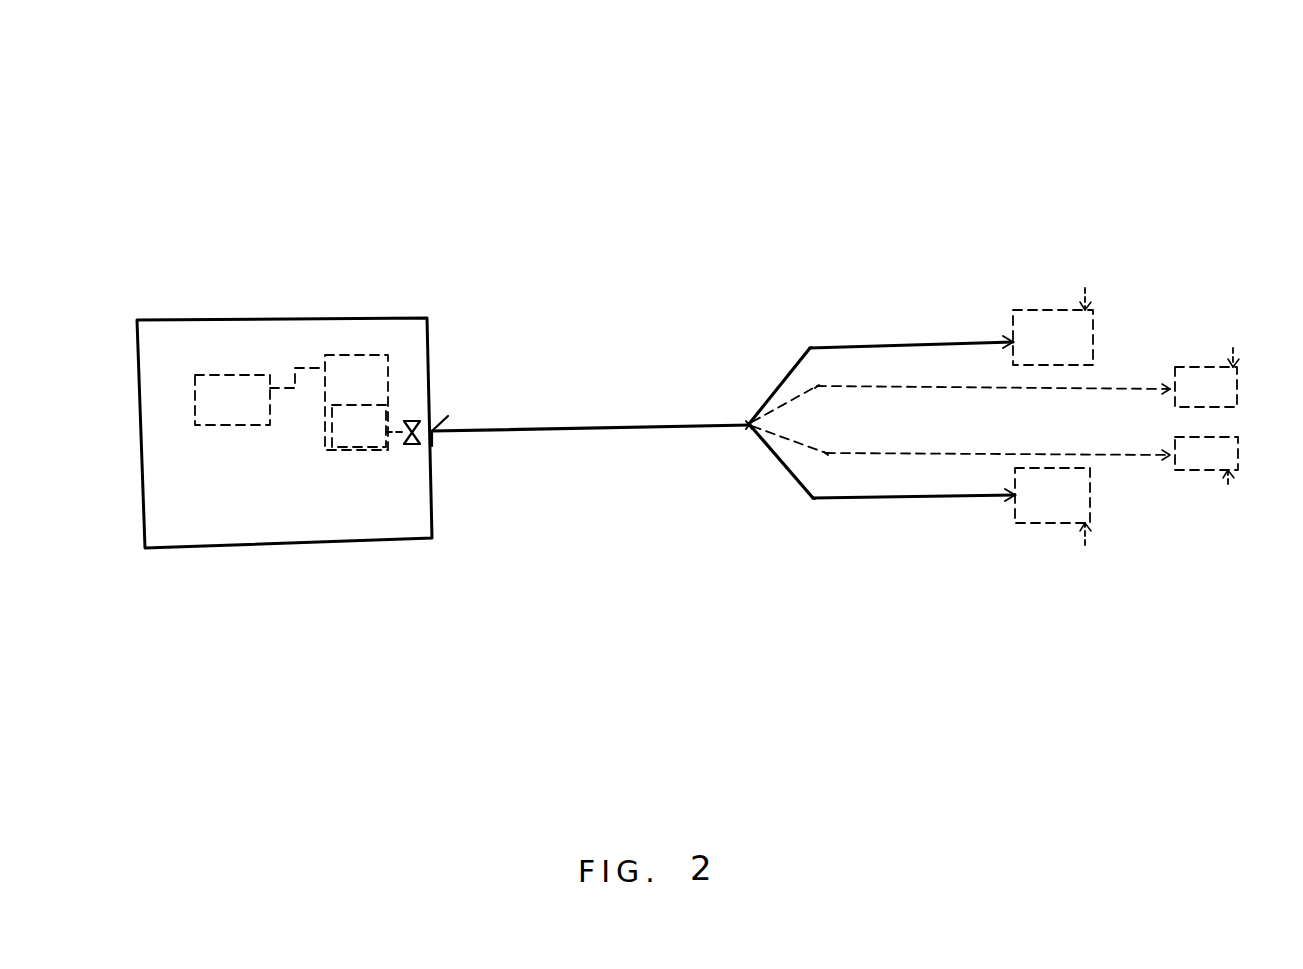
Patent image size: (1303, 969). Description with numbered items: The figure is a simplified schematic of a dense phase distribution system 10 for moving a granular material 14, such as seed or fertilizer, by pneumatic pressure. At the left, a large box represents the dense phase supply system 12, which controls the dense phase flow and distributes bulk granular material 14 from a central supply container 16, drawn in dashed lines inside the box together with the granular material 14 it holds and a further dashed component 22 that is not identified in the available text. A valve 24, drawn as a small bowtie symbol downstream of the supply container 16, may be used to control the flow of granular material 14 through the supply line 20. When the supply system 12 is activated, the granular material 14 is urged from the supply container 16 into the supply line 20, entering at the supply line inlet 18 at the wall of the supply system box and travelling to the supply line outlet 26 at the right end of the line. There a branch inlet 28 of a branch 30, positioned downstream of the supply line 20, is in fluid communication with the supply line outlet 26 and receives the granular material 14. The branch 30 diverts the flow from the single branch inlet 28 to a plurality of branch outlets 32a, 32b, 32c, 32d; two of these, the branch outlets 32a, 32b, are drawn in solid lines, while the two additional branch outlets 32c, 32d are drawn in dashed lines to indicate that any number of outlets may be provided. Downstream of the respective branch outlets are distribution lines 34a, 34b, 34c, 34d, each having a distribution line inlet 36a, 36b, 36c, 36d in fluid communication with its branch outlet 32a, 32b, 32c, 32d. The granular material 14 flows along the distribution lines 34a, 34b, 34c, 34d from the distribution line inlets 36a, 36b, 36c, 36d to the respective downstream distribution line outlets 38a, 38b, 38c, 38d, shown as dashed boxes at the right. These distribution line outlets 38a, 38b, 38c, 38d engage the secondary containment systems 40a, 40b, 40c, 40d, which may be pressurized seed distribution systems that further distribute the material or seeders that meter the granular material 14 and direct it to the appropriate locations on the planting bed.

The dense phase distribution system 10 is at (711, 142).
The dense phase supply system 12 is at (219, 306).
The granular material 14 is at (359, 426).
The supply container 16 is at (376, 352).
The supply line inlet 18 is at (434, 430).
The supply line 20 is at (548, 433).
The controller 22 is at (260, 396).
The valve 24 is at (410, 448).
The supply line outlet 26 is at (746, 420).
The branch inlet 28 is at (749, 430).
The branch 30 is at (785, 352).
The branch outlet 32a is at (800, 350).
The branch outlet 32b is at (806, 500).
The branch outlet 32c is at (823, 400).
The branch outlet 32d is at (840, 465).
The distribution line 34a is at (898, 342).
The distribution line 34b is at (930, 500).
The distribution line 34c is at (905, 386).
The distribution line 34d is at (938, 457).
The distribution line inlet 36a is at (810, 348).
The distribution line inlet 36b is at (815, 498).
The distribution line inlet 36c is at (834, 377).
The distribution line inlet 36d is at (845, 447).
The distribution line outlet 38a is at (1012, 340).
The distribution line outlet 38b is at (1014, 498).
The distribution line outlet 38c is at (1174, 388).
The distribution line outlet 38d is at (1168, 470).
The secondary containment system 40a is at (1085, 288).
The secondary containment system 40b is at (1085, 545).
The secondary containment system 40c is at (1233, 348).
The secondary containment system 40d is at (1228, 484).